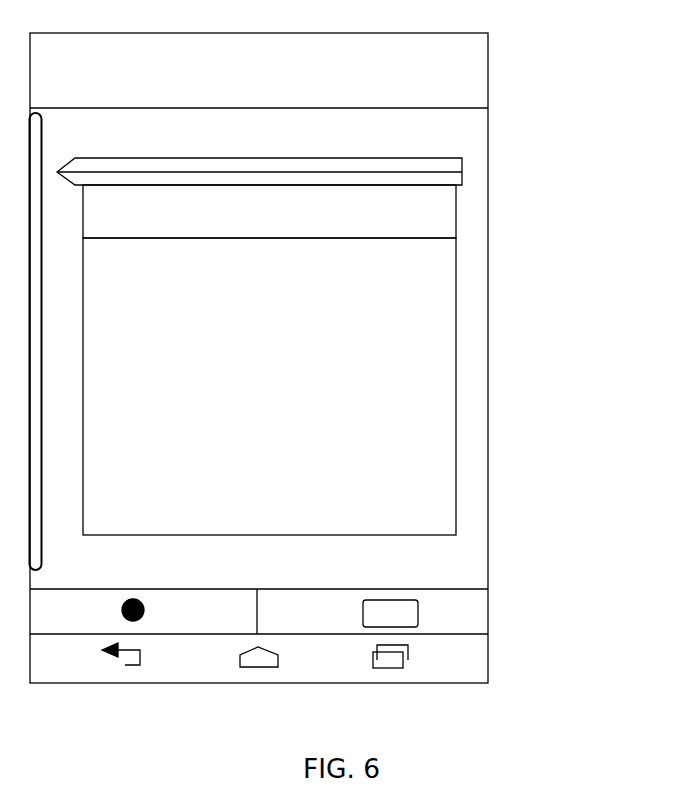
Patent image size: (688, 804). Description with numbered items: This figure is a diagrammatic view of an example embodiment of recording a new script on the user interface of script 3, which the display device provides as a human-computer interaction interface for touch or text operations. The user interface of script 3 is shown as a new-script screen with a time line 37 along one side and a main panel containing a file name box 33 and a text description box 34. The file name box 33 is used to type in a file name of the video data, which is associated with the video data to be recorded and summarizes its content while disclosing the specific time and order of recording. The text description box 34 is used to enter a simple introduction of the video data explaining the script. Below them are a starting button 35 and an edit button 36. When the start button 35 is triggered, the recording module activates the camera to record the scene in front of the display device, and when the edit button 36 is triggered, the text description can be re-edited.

The user interface of script 3 is at (504, 420).
The file name box 33 is at (269, 211).
The text description box 34 is at (269, 386).
The start button 35 is at (178, 575).
The edit button 36 is at (390, 600).
The time line 37 is at (43, 342).